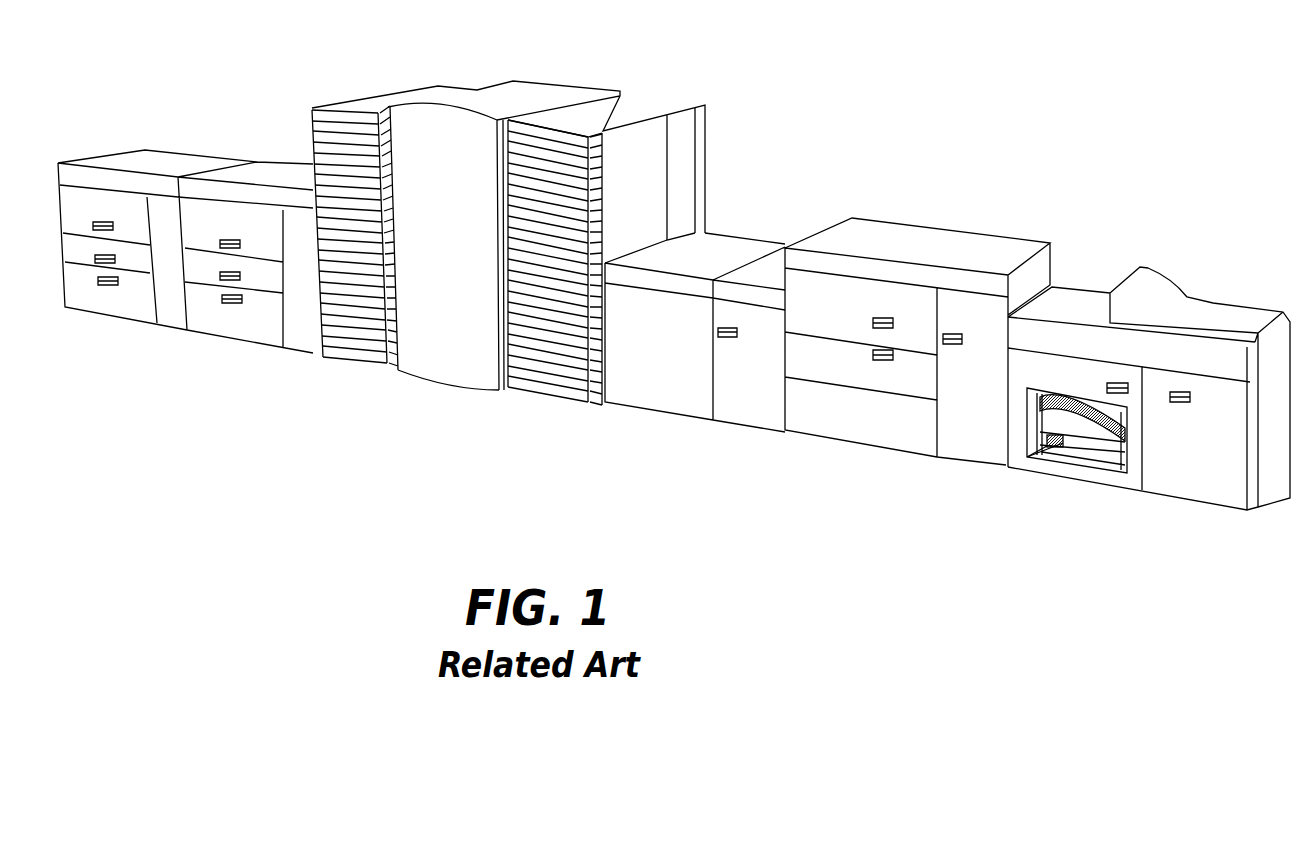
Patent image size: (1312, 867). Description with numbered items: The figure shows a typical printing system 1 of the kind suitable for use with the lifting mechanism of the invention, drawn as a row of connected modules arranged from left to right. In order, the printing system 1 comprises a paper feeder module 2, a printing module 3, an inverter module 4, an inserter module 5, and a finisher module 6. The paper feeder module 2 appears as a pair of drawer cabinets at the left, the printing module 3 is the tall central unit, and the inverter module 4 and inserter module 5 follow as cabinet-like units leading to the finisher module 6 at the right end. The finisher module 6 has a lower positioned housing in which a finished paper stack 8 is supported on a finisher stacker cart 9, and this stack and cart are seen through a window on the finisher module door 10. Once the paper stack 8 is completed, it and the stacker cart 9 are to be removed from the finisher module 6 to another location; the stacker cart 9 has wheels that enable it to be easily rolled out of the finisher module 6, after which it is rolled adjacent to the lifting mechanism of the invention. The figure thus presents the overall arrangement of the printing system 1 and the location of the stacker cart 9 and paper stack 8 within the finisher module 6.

The printing system 1 is at (880, 110).
The paper feeder module 2 is at (177, 338).
The printing module 3 is at (437, 388).
The inverter module 4 is at (678, 418).
The inserter module 5 is at (870, 452).
The finisher module 6 is at (1067, 482).
The finished paper stack 8 is at (1092, 432).
The finisher stacker cart 9 is at (1063, 443).
The finisher module door 10 is at (1012, 432).